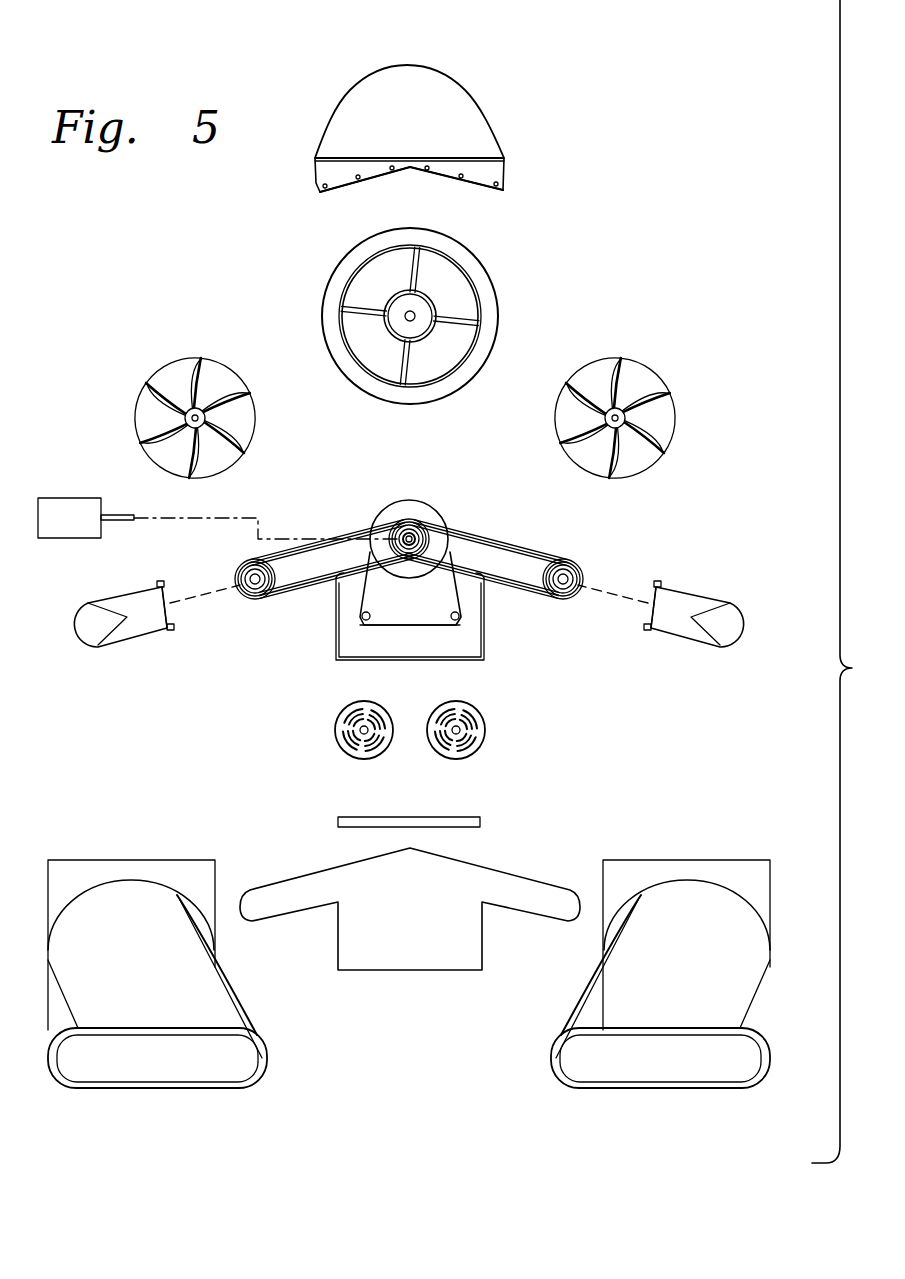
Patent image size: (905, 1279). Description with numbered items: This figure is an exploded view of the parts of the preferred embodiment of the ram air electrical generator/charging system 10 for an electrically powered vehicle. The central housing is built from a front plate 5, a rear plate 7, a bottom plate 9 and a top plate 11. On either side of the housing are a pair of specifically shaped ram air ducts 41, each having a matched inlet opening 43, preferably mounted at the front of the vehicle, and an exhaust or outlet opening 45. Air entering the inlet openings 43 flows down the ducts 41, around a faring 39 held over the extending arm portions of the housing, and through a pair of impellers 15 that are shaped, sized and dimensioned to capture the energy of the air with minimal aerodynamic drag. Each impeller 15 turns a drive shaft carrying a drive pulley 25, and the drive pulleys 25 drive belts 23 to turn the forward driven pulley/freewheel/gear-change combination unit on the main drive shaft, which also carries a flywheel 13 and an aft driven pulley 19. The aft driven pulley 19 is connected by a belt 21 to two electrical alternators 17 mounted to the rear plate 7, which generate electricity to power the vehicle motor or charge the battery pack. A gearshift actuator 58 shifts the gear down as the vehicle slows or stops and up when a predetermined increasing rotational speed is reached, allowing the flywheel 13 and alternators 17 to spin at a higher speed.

The front plate 5 is at (337, 932).
The rear plate 7 is at (356, 648).
The bottom plate 9 is at (482, 822).
The air treatment device 10 is at (640, 174).
The top plate 11 is at (442, 82).
The flywheel 13 is at (494, 281).
The impellers 15 is at (206, 366).
The electrical alternators 17 is at (480, 712).
The aft driven pulley 19 is at (408, 506).
The belt 21 is at (466, 596).
The drive belts 23 is at (284, 553).
The drive pulley 25 is at (243, 576).
The faring 39 is at (80, 640).
The ram air ducts 41 is at (96, 860).
The inlet openings 43 is at (184, 1065).
The outlet openings 45 is at (136, 857).
The gearshift actuator 58 is at (76, 497).